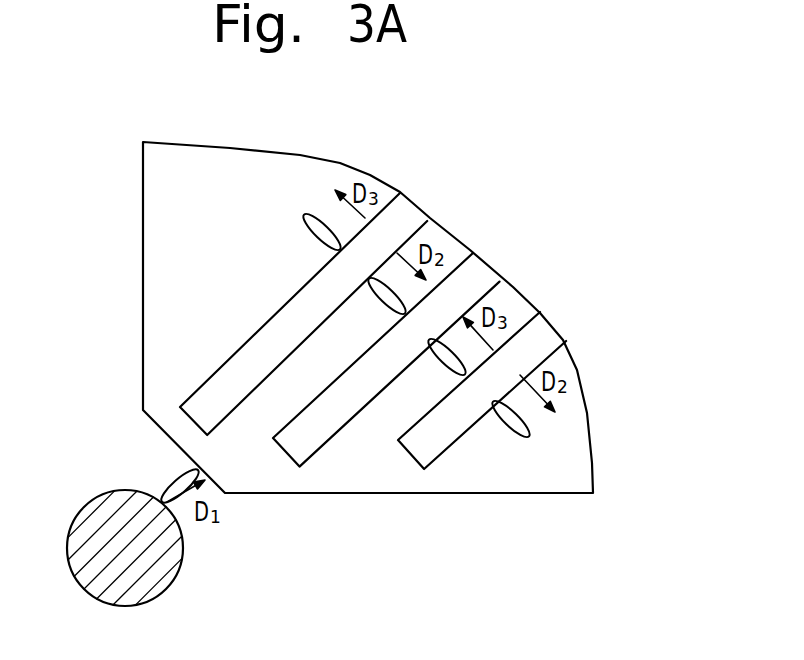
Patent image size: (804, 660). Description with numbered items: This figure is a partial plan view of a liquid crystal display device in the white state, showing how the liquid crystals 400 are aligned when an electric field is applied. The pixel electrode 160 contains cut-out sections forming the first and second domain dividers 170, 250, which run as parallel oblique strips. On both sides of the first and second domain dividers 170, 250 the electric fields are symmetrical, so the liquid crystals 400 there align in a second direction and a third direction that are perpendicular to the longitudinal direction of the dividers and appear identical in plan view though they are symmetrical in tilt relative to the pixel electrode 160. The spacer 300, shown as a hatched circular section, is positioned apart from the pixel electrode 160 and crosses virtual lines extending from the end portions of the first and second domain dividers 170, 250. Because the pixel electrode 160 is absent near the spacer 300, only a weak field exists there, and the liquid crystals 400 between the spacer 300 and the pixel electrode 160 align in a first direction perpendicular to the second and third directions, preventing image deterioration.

The pixel electrode 160 is at (580, 446).
The first domain divider 170 is at (408, 208).
The second domain divider 250 is at (477, 265).
The spacer 300 is at (97, 503).
The liquid crystals 400 is at (307, 218).